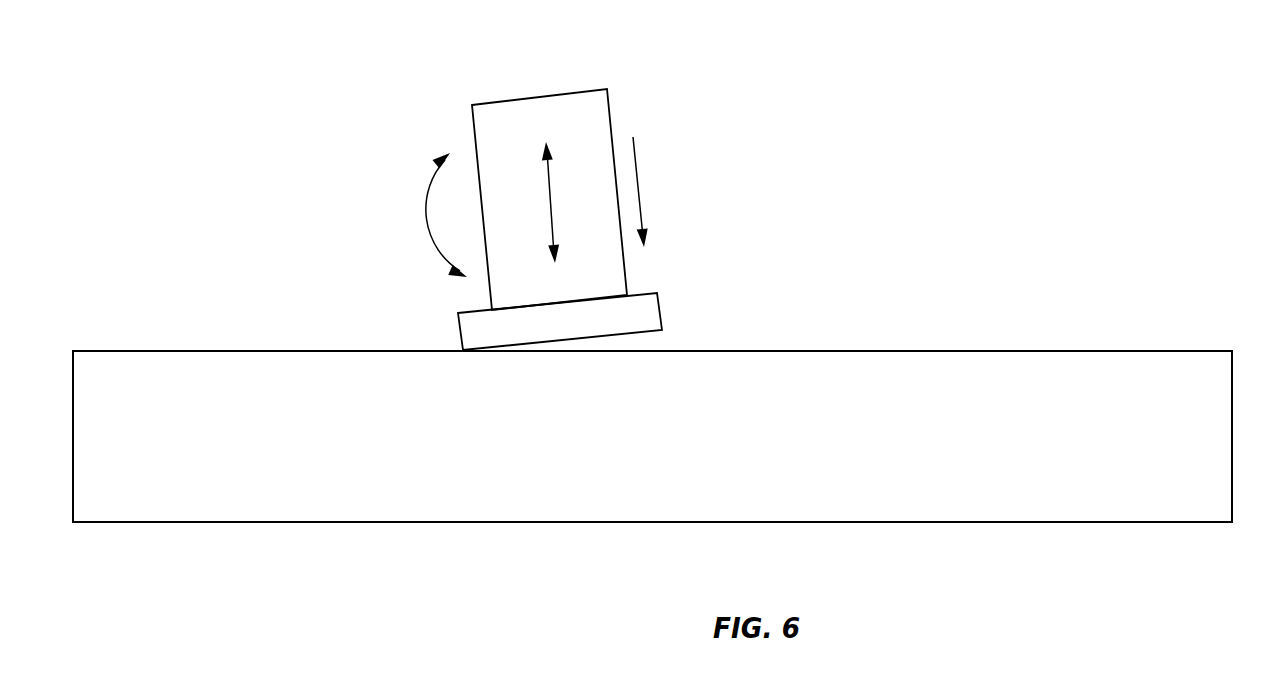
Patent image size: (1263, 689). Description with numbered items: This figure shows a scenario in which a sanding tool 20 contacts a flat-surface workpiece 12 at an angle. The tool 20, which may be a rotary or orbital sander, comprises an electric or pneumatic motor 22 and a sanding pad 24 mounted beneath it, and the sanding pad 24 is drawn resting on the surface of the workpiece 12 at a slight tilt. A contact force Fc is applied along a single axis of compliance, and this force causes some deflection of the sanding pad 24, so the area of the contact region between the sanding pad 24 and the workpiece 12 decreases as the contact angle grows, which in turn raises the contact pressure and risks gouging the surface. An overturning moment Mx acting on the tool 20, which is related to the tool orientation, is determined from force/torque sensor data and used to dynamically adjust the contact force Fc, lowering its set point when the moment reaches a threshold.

The workpiece 12 is at (652, 450).
The tool 20 is at (648, 57).
The motor 22 is at (505, 123).
The sanding pad 24 is at (643, 314).